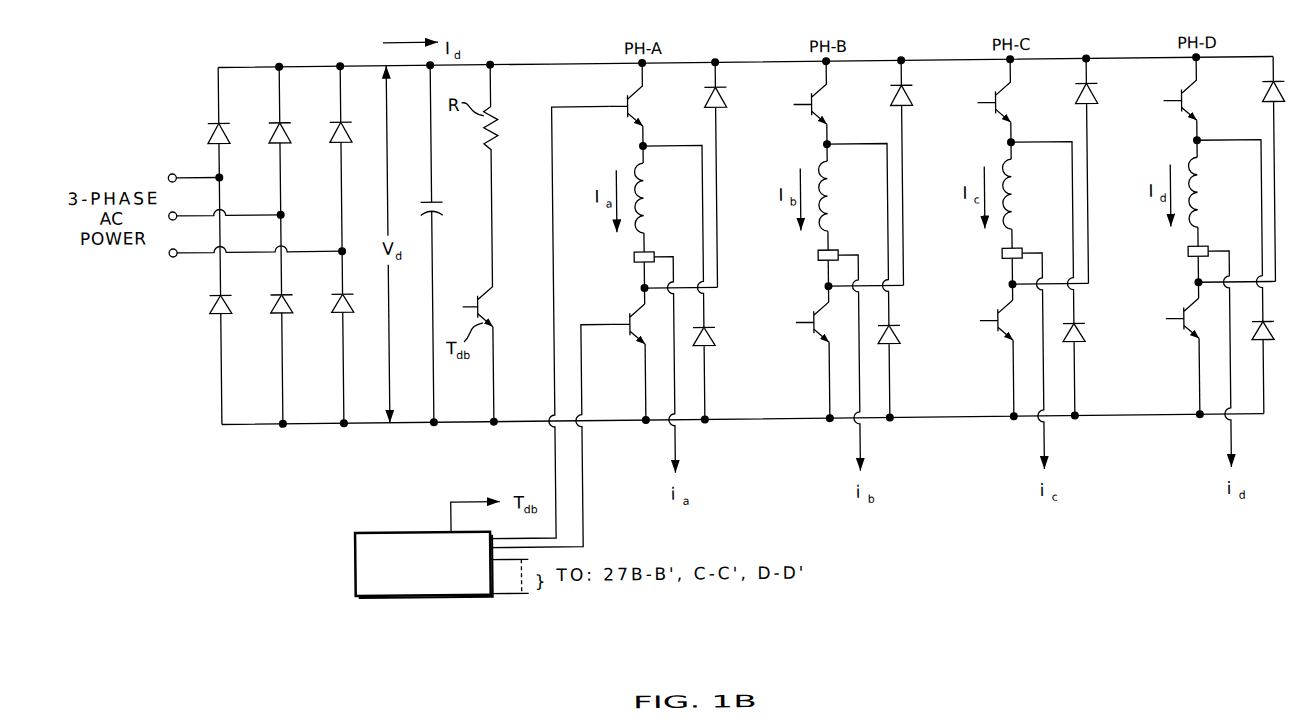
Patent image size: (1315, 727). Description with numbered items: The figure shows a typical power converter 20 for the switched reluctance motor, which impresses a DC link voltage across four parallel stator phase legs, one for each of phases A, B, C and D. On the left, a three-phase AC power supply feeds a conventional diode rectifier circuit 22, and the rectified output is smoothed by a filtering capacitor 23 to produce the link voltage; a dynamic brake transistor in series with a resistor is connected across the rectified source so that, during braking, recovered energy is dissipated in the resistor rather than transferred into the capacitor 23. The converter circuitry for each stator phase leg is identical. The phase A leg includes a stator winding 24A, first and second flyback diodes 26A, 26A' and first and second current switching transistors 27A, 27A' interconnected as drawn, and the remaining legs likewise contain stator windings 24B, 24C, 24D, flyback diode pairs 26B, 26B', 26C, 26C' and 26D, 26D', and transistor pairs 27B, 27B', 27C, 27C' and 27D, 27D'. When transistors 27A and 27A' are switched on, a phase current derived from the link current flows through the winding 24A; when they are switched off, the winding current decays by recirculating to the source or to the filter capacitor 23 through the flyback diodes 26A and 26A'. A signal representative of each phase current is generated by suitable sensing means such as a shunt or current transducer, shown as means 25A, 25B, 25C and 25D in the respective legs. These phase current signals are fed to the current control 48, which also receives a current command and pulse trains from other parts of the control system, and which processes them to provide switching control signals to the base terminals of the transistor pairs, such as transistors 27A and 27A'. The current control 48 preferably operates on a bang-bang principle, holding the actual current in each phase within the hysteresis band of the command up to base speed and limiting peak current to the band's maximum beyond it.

The power converter 20 is at (750, 48).
The diode rectifier circuit 22 is at (320, 172).
The filtering capacitor 23 is at (441, 200).
The stator winding 24A is at (640, 166).
The stator winding 24B is at (824, 166).
The stator winding 24C is at (1008, 166).
The stator winding 24D is at (1194, 166).
The current sensing means 25A is at (634, 268).
The current sensing means 25B is at (818, 268).
The current sensing means 25C is at (1002, 268).
The current sensing means 25D is at (1188, 268).
The first flyback diode 26A is at (707, 98).
The second flyback diode 26A' is at (705, 282).
The first flyback diode 26B is at (891, 98).
The second flyback diode 26B' is at (889, 280).
The first flyback diode 26C is at (1075, 98).
The second flyback diode 26C' is at (1074, 278).
The first flyback diode 26D is at (1263, 98).
The second flyback diode 26D' is at (1251, 276).
The first current switching transistor 27A is at (632, 96).
The second current switching transistor 27A' is at (621, 347).
The first current switching transistor 27B is at (816, 96).
The second current switching transistor 27B' is at (788, 340).
The first current switching transistor 27C is at (1000, 96).
The second current switching transistor 27C' is at (972, 338).
The first current switching transistor 27D is at (1186, 96).
The second current switching transistor 27D' is at (1158, 336).
The current control 48 is at (422, 595).